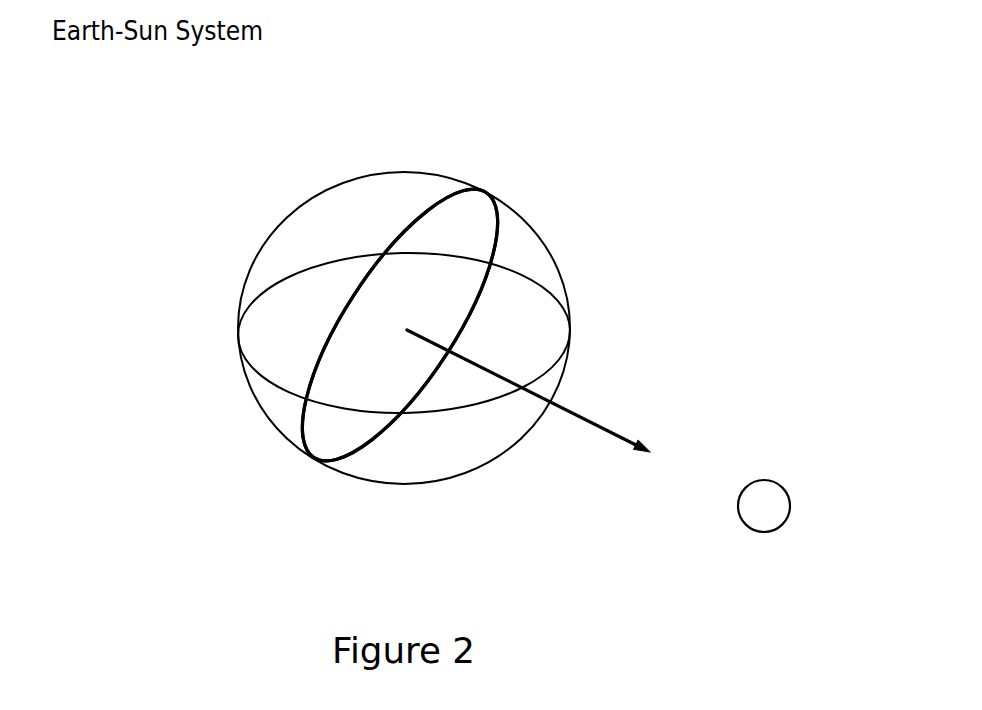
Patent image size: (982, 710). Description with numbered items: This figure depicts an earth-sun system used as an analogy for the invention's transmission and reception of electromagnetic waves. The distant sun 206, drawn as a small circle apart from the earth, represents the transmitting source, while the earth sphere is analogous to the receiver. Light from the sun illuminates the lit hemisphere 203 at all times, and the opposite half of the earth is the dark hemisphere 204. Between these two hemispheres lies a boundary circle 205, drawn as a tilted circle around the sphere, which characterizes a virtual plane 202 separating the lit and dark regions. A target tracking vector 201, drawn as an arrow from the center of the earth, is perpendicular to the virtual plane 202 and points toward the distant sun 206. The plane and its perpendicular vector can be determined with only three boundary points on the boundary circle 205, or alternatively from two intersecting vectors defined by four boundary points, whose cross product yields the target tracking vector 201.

The target tracking vector 201 is at (590, 435).
The virtual plane 202 is at (333, 377).
The lit hemisphere 203 is at (520, 321).
The dark hemisphere 204 is at (298, 257).
The boundary circle 205 is at (467, 188).
The distant sun 206 is at (731, 546).